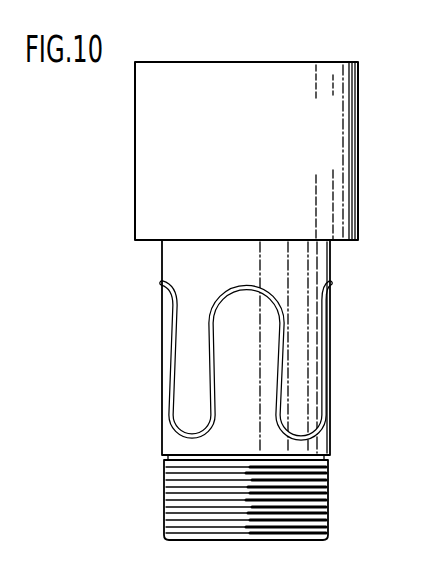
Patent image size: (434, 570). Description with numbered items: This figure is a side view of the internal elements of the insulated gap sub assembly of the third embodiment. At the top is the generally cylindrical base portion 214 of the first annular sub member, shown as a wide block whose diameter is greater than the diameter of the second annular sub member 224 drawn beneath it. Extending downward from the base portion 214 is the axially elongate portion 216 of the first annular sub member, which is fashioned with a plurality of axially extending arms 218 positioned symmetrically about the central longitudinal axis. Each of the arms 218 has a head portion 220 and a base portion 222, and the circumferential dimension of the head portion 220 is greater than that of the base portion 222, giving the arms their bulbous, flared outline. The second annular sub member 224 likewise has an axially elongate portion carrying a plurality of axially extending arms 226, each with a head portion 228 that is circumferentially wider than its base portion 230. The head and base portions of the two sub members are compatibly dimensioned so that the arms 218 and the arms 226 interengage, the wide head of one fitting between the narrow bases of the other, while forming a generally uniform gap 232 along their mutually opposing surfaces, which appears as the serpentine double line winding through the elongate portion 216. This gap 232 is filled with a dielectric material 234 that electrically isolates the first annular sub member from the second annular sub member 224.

The base portion 214 is at (147, 192).
The axially elongate portion 216 is at (236, 347).
The axially extending arms 218 is at (178, 374).
The head portion 220 is at (203, 418).
The base portion 222 is at (198, 315).
The second annular sub member 224 is at (330, 448).
The axially extending arms 226 is at (330, 307).
The head portion 228 is at (253, 285).
The base portion 230 is at (248, 413).
The gap 232 is at (293, 275).
The dielectric material 234 is at (170, 333).